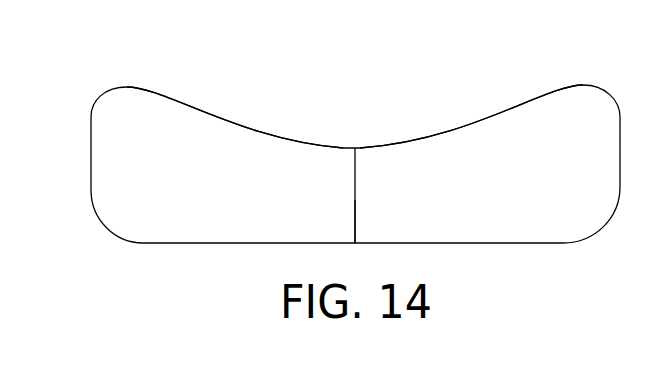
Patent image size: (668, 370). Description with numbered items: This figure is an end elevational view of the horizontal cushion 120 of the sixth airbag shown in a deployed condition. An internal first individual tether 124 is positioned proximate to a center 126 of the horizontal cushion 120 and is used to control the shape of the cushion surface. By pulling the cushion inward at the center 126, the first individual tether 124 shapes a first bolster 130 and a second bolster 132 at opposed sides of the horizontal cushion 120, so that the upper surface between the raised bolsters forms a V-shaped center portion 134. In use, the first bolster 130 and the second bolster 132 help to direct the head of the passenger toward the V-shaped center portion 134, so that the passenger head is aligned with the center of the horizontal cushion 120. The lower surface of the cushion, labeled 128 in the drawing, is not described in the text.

The horizontal cushion 120 is at (452, 105).
The first individual tether 124 is at (362, 165).
The center 126 is at (355, 218).
The bottom surface 128 is at (190, 225).
The first bolster 130 is at (115, 112).
The second bolster 132 is at (588, 107).
The V-shaped center portion 134 is at (265, 137).